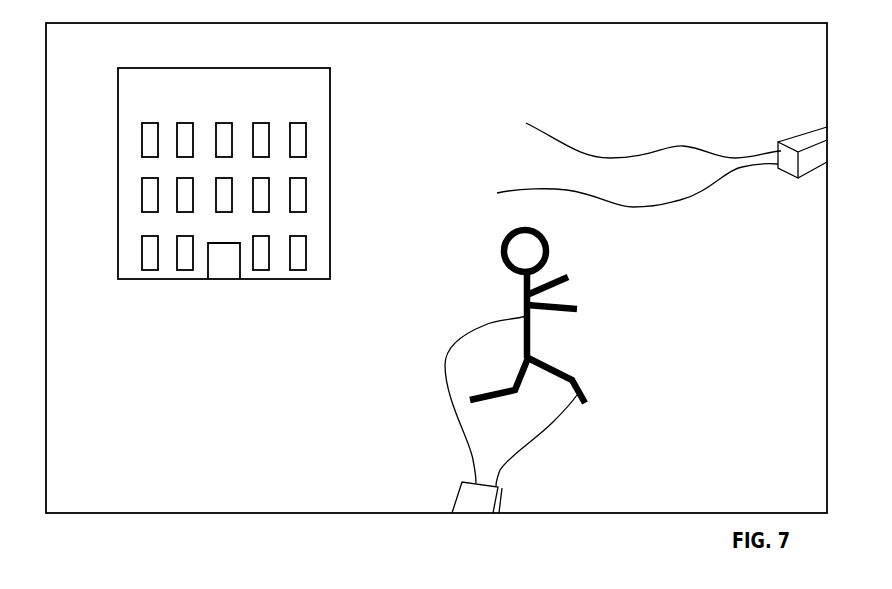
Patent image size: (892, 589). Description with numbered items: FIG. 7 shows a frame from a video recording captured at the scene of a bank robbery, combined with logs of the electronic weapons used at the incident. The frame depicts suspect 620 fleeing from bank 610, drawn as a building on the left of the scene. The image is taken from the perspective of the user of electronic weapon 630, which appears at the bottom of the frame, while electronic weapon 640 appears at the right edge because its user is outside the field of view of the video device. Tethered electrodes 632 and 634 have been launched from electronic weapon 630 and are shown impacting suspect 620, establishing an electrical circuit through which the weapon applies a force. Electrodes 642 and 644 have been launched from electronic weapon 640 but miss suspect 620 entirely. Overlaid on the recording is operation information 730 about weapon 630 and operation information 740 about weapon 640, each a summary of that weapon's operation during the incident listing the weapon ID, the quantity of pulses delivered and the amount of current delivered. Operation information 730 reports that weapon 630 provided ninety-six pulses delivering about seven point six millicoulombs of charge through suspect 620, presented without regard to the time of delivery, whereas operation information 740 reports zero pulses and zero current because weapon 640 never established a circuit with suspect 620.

The bank 610 is at (118, 107).
The suspect 620 is at (550, 365).
The electronic weapon 630 is at (504, 490).
The tethered electrode 632 is at (444, 377).
The tethered electrode 634 is at (550, 430).
The electronic weapon 640 is at (807, 130).
The electrode 642 is at (683, 147).
The electrode 644 is at (696, 205).
The operation information 730 is at (131, 420).
The operation information 740 is at (455, 99).